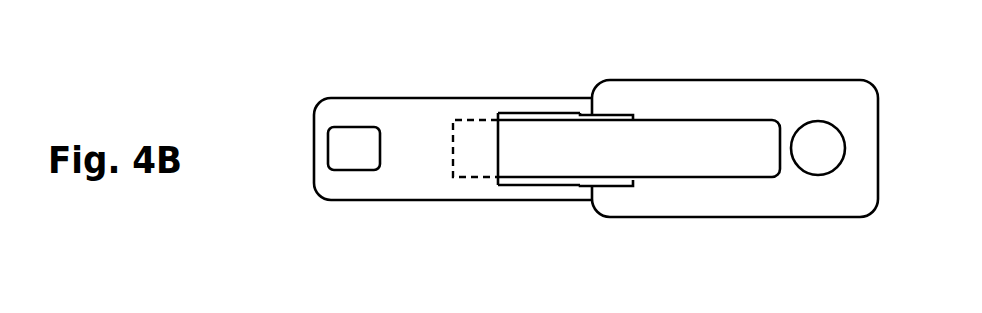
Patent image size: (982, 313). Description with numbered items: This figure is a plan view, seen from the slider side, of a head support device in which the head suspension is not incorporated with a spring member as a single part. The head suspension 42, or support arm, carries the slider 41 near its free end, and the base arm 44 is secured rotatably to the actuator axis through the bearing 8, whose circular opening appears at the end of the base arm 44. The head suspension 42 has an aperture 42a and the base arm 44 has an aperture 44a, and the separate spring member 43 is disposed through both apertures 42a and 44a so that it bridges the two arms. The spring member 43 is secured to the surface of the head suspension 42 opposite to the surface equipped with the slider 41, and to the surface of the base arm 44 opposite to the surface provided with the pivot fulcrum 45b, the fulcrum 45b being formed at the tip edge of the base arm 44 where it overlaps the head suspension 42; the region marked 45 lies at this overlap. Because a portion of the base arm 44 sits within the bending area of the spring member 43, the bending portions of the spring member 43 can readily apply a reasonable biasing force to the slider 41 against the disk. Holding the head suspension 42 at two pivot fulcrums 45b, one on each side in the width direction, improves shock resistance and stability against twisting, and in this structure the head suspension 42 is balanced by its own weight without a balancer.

The head suspension 42 is at (418, 117).
The slider 41 is at (353, 157).
The base arm 44 is at (693, 103).
The bearing 8 is at (825, 133).
The spring member 43 is at (728, 143).
The aperture 42a is at (518, 182).
The engaging portion 45 is at (585, 195).
The pivot fulcrum 45b is at (590, 100).
The aperture 44a is at (615, 182).